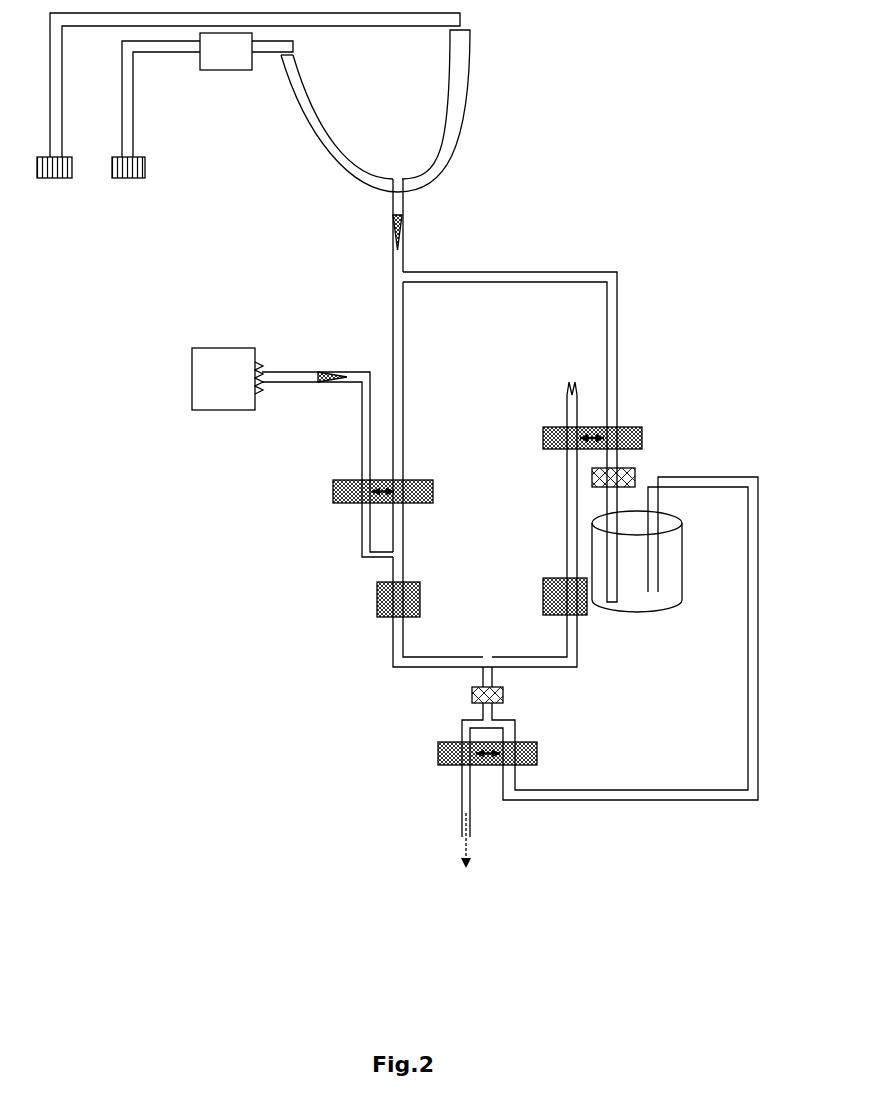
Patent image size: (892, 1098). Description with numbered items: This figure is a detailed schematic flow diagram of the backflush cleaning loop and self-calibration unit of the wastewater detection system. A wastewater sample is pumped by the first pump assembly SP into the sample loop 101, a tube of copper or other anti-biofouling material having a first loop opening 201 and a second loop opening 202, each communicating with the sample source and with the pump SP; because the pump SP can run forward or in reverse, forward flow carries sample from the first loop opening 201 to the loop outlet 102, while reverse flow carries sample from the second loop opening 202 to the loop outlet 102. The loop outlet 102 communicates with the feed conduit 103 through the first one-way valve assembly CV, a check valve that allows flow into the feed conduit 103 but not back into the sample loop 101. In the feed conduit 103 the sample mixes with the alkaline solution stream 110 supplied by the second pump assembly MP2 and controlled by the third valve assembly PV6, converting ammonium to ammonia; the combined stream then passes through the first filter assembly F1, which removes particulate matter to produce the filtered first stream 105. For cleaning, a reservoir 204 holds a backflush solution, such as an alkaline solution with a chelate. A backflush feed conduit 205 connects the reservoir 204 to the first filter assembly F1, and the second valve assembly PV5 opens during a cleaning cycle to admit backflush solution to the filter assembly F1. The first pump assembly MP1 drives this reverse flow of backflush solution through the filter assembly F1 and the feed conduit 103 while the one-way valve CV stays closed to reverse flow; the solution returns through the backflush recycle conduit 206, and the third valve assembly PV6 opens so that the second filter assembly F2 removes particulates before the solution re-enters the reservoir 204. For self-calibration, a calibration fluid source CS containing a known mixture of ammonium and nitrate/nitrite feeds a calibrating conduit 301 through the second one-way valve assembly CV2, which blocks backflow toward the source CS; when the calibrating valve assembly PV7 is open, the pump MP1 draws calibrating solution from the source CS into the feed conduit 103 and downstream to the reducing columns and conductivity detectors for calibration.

The sample loop 101 is at (478, 97).
The loop outlet 102 is at (398, 165).
The feed conduit 103 is at (410, 367).
The filtered first stream 105 is at (450, 812).
The alkaline solution stream 110 is at (556, 497).
The first loop opening 201 is at (122, 192).
The second loop opening 202 is at (57, 192).
The reservoir 204 is at (665, 603).
The backflush feed conduit 205 is at (763, 633).
The backflush recycle conduit 206 is at (552, 263).
The calibrating conduit 301 is at (358, 443).
The first pump assembly SP is at (218, 75).
The first one-way valve assembly CV is at (390, 228).
The second one-way valve assembly CV2 is at (332, 365).
The calibration fluid source CS is at (227, 379).
The second valve assembly PV5 is at (432, 766).
The third valve assembly PV6 is at (643, 425).
The calibrating valve assembly PV7 is at (328, 504).
The first pump assembly MP1 is at (370, 608).
The second pump assembly MP2 is at (533, 573).
The first filter assembly F1 is at (465, 690).
The second filter assembly F2 is at (636, 467).